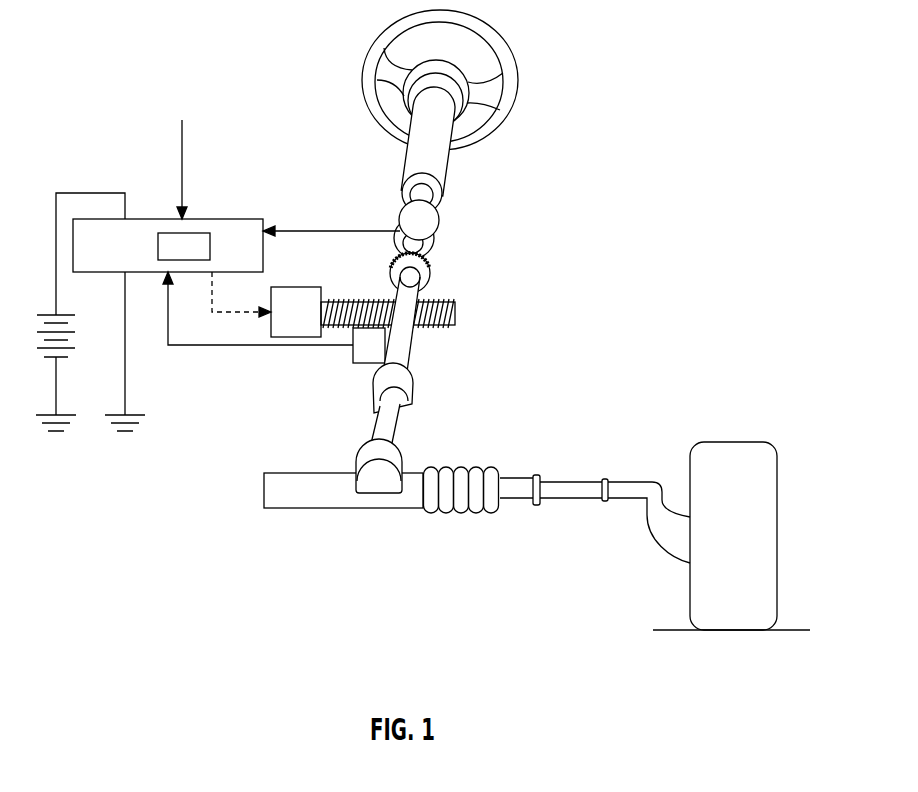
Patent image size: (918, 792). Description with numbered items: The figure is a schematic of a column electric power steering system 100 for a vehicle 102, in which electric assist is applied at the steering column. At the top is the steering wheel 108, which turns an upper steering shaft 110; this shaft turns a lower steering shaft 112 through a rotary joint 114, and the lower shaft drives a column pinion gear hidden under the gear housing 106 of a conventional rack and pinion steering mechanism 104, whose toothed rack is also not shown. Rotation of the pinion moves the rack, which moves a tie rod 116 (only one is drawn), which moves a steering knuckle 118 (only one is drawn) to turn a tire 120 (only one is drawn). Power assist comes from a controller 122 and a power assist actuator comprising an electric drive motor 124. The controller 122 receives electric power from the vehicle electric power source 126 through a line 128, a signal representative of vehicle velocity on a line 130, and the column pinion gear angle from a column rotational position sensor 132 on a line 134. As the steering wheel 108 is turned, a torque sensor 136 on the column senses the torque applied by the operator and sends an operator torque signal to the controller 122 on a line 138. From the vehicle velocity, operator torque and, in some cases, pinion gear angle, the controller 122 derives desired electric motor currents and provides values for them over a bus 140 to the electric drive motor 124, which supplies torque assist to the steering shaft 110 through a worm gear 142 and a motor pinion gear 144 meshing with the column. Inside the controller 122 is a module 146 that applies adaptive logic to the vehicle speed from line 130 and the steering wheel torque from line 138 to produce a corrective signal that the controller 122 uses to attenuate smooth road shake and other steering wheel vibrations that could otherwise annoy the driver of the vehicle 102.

The electric power steering system 100 is at (560, 231).
The vehicle 102 is at (620, 369).
The rack and pinion steering mechanism 104 is at (445, 515).
The gear housing 106 is at (365, 461).
The steering wheel 108 is at (484, 48).
The upper steering shaft 110 is at (428, 192).
The lower steering shaft 112 is at (390, 436).
The rotary joint 114 is at (407, 390).
The tie rod 116 is at (558, 497).
The steering knuckle 118 is at (663, 535).
The tire 120 is at (745, 443).
The controller 122 is at (160, 219).
The electric drive motor 124 is at (292, 338).
The vehicle electric power source 126 is at (75, 340).
The line 128 is at (90, 192).
The line 130 is at (184, 157).
The column rotational position sensor 132 is at (360, 365).
The line 134 is at (193, 347).
The torque sensor 136 is at (432, 228).
The line 138 is at (328, 231).
The bus 140 is at (240, 313).
The worm gear 142 is at (458, 313).
The motor pinion gear 144 is at (430, 278).
The module 146 is at (157, 246).